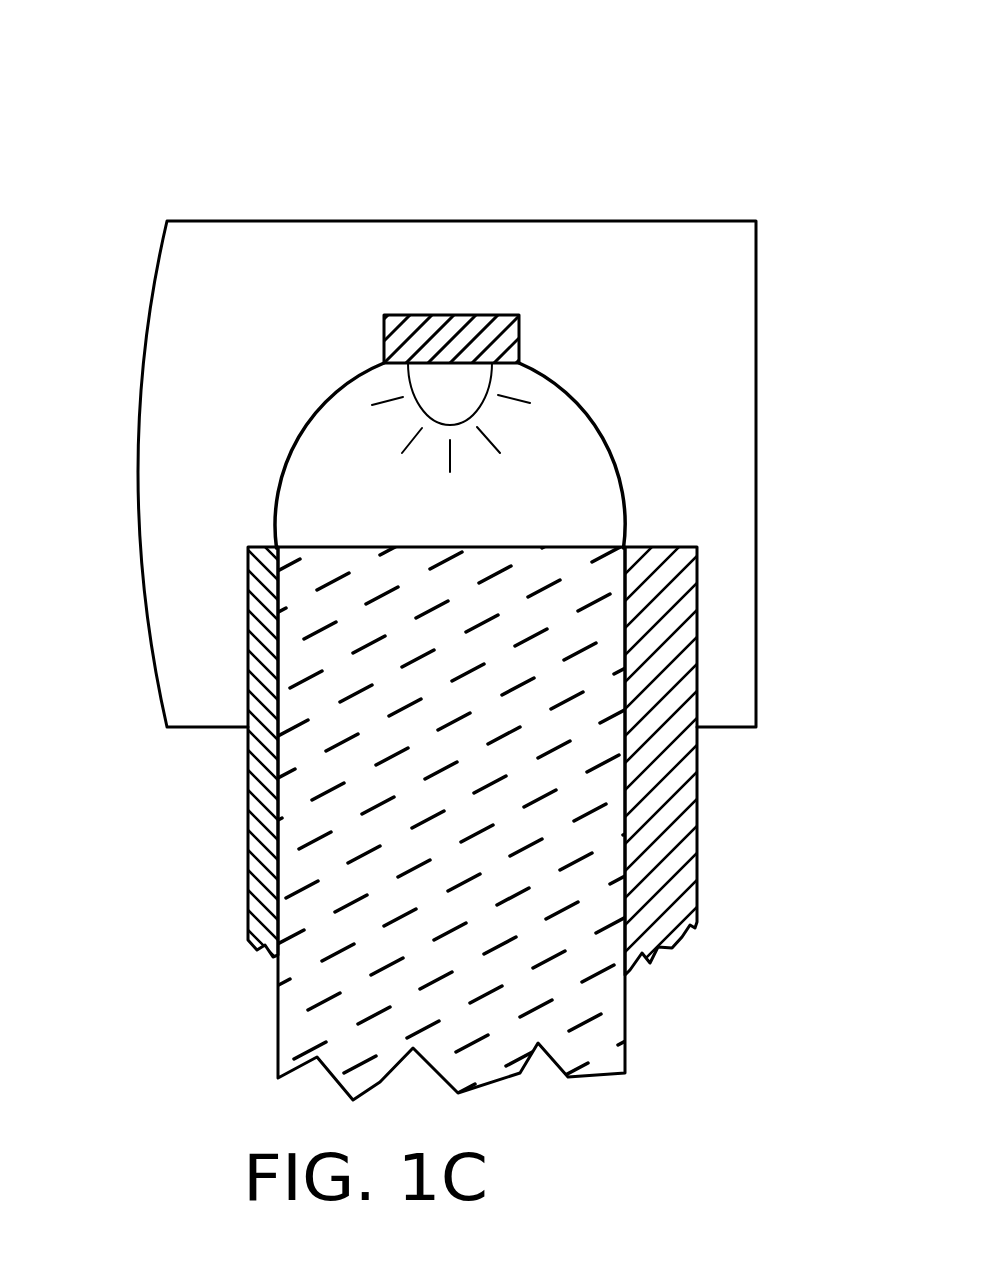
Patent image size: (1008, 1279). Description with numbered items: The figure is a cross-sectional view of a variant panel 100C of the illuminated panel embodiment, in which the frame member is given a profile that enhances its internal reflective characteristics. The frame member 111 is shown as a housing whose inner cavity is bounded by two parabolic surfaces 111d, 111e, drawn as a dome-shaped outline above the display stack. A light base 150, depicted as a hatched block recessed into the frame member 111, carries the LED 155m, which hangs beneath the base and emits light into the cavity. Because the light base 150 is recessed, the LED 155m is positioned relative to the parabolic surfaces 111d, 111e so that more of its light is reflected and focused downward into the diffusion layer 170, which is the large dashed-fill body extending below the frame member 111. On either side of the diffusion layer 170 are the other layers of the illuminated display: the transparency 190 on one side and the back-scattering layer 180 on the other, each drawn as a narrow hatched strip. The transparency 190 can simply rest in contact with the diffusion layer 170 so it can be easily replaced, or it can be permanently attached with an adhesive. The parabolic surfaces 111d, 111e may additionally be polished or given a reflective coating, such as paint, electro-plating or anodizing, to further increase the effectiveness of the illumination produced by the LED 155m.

The panel variant 100C is at (230, 67).
The frame member 111 is at (558, 221).
The parabolic surface 111d is at (285, 510).
The parabolic surface 111e is at (592, 446).
The light base 150 is at (437, 313).
The LED 155m is at (493, 385).
The diffusion layer 170 is at (627, 1013).
The back-scattering layer 180 is at (700, 828).
The transparency 190 is at (248, 868).